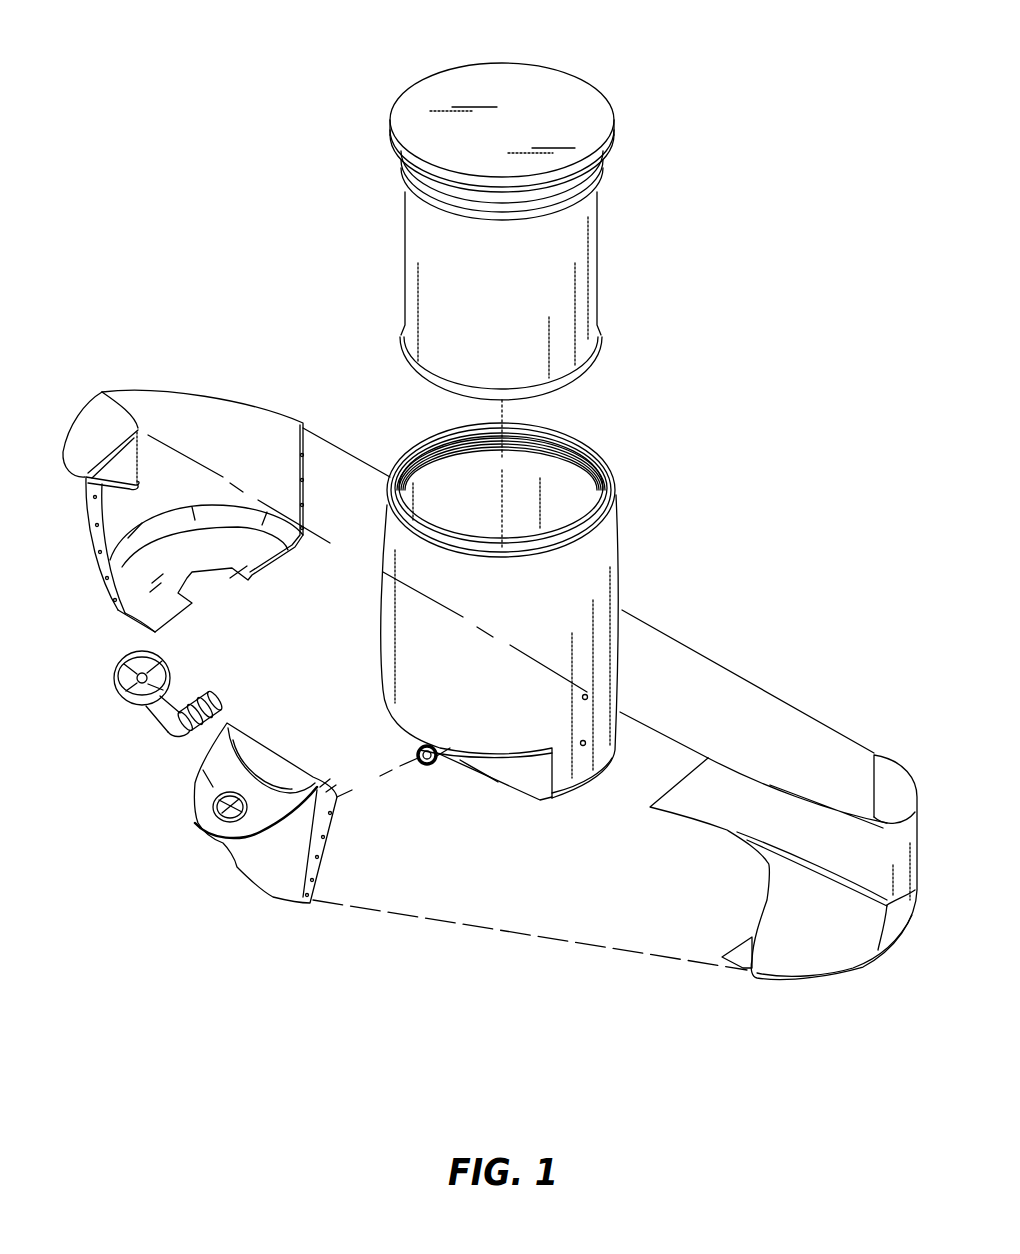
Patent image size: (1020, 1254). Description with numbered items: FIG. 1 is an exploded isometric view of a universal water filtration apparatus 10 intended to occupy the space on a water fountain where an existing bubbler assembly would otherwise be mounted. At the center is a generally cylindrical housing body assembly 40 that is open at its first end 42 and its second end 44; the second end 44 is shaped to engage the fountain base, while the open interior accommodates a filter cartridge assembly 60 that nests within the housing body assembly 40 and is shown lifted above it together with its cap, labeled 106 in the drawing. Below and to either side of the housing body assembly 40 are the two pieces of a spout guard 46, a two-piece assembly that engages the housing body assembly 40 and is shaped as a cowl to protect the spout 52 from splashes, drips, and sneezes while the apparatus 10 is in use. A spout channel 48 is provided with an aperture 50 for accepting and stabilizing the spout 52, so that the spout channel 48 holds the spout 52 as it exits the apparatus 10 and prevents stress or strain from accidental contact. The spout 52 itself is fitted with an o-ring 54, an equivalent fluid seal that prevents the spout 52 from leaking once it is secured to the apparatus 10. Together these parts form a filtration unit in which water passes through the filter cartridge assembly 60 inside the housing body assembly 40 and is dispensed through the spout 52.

The universal water filtration apparatus 10 is at (800, 240).
The lid 106 is at (583, 118).
The filter cartridge assembly 60 is at (570, 265).
The housing body assembly 40 is at (600, 597).
The first end 42 is at (585, 500).
The second end 44 is at (600, 740).
The spout guard 46 is at (95, 438).
The spout channel 48 is at (280, 878).
The aperture 50 is at (213, 813).
The spout 52 is at (162, 716).
The o-ring 54 is at (195, 698).